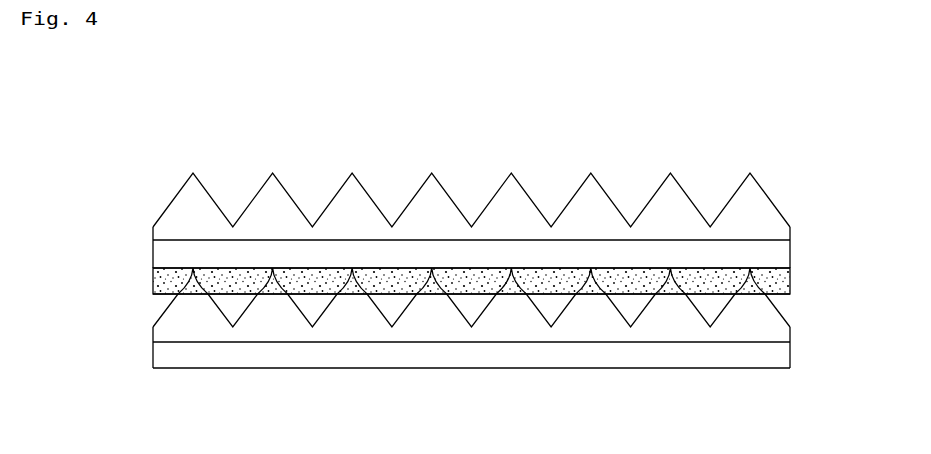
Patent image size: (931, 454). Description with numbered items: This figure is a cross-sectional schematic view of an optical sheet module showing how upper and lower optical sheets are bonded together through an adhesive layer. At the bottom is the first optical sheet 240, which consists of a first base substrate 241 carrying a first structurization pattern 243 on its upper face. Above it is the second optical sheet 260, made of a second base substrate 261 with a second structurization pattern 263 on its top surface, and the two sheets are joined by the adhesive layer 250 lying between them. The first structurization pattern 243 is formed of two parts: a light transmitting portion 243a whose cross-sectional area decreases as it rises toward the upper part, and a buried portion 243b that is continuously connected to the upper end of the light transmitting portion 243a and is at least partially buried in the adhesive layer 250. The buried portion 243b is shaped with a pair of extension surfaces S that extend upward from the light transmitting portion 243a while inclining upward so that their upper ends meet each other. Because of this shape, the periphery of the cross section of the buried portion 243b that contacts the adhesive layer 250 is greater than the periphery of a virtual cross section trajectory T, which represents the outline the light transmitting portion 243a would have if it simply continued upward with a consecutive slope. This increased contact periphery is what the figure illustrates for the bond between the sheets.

The first optical sheet 240 is at (445, 330).
The first base substrate 241 is at (418, 353).
The first structurization pattern 243 is at (408, 330).
The light transmitting portion 243a is at (190, 323).
The buried portion 243b is at (190, 285).
The adhesive layer 250 is at (783, 278).
The second optical sheet 260 is at (508, 190).
The second base substrate 261 is at (527, 252).
The second structurization pattern 263 is at (500, 212).
The extension surface S is at (190, 275).
The virtual cross section trajectory T is at (190, 290).